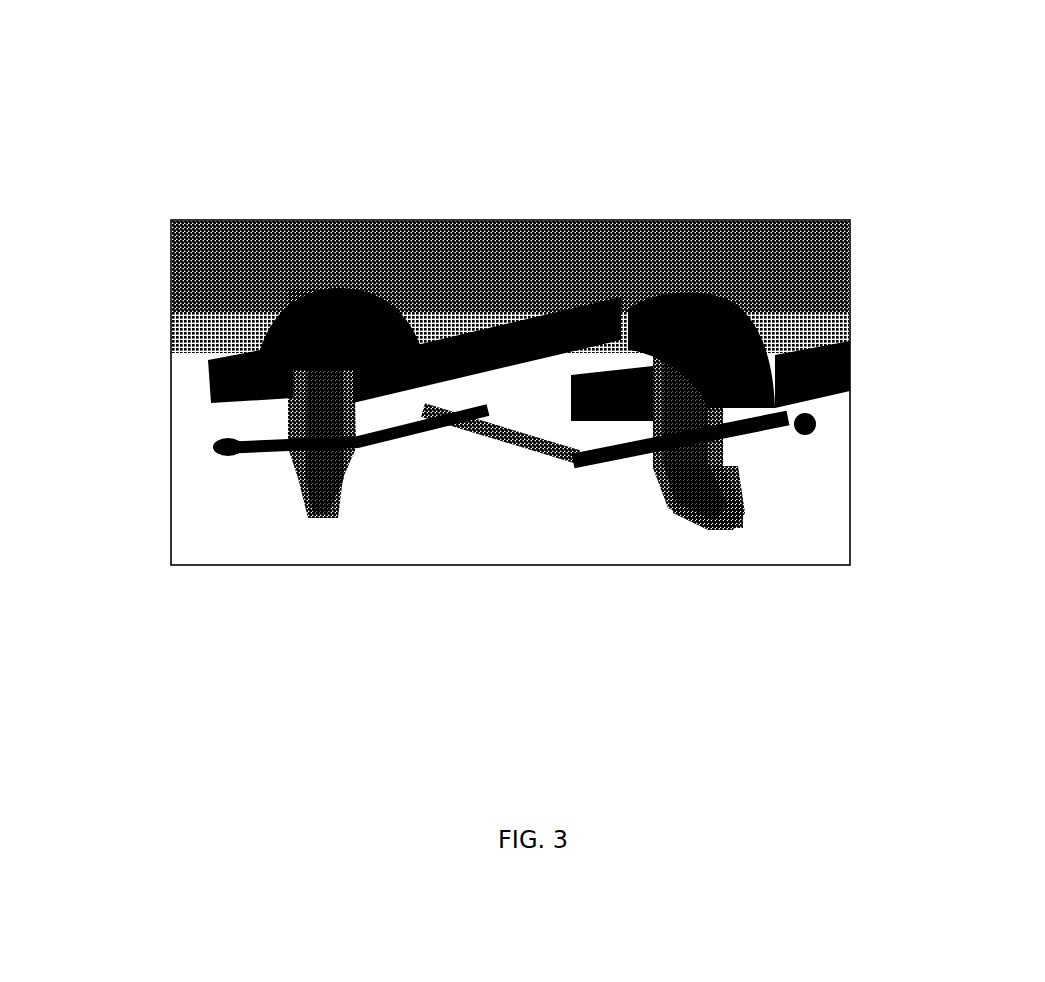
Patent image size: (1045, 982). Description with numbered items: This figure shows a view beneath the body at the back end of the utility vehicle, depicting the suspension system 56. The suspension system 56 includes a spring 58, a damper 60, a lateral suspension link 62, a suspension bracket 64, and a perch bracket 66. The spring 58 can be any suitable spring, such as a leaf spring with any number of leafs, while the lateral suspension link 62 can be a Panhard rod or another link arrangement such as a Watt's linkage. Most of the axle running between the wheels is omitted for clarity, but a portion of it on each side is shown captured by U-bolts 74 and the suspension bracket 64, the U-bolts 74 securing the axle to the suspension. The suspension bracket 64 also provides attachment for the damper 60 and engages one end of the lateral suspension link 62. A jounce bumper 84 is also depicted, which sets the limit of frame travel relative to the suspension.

The suspension system 56 is at (172, 116).
The spring 58 is at (787, 428).
The damper 60 is at (381, 315).
The lateral suspension link 62 is at (478, 420).
The suspension bracket 64 is at (700, 342).
The perch bracket 66 is at (686, 478).
The U-bolts 74 is at (703, 423).
The jounce bumper 84 is at (673, 440).